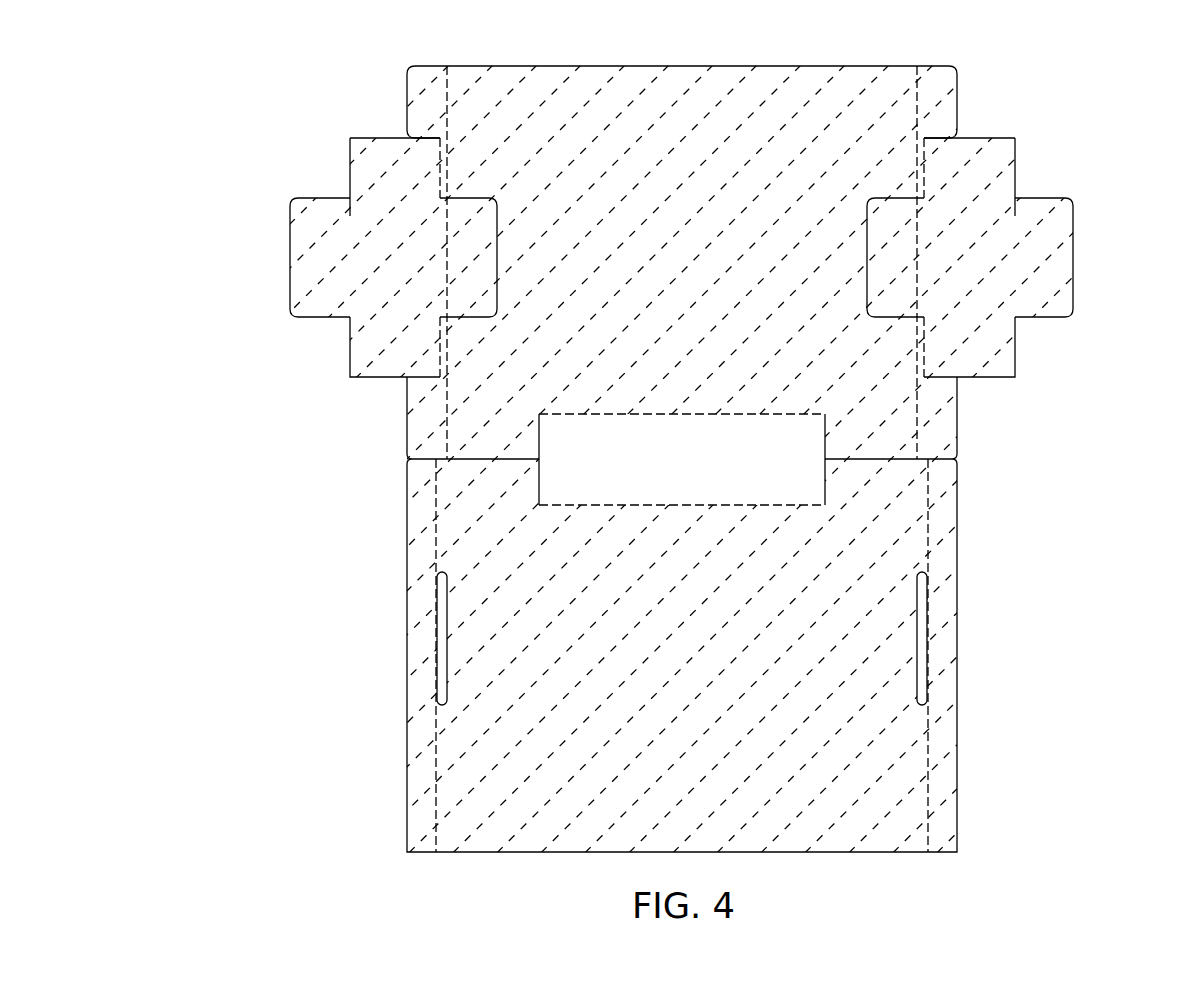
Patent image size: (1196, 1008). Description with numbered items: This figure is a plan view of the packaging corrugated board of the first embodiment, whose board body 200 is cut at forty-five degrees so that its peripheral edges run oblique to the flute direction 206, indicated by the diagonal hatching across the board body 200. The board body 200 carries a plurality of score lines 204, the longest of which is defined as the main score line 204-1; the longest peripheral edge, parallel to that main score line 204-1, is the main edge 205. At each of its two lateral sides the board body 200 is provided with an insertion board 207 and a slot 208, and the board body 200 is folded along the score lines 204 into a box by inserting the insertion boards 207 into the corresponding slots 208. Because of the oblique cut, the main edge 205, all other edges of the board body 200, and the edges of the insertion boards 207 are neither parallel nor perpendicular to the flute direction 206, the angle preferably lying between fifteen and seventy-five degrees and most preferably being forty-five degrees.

The board body 200 is at (270, 93).
The score lines 204 is at (447, 98).
The main score line 204-1 is at (555, 505).
The main edge 205 is at (924, 66).
The flute direction 206 is at (610, 82).
The insertion board 207 is at (400, 247).
The slot 208 is at (437, 637).